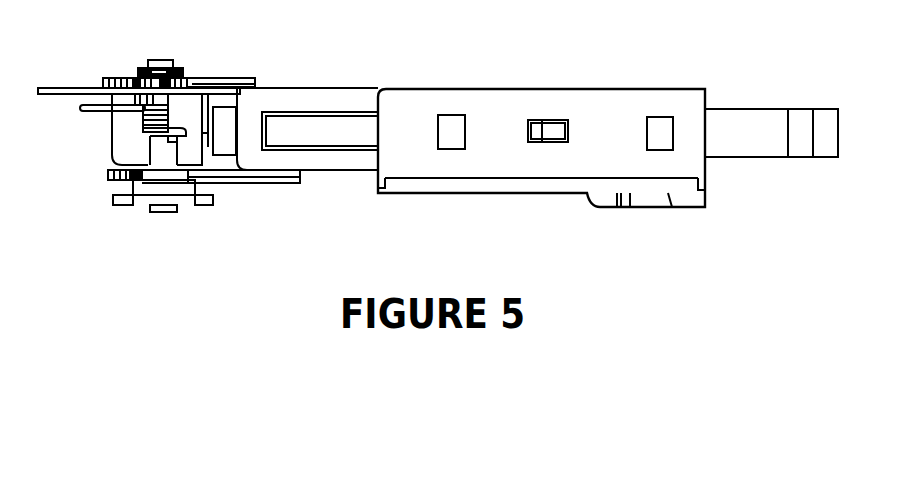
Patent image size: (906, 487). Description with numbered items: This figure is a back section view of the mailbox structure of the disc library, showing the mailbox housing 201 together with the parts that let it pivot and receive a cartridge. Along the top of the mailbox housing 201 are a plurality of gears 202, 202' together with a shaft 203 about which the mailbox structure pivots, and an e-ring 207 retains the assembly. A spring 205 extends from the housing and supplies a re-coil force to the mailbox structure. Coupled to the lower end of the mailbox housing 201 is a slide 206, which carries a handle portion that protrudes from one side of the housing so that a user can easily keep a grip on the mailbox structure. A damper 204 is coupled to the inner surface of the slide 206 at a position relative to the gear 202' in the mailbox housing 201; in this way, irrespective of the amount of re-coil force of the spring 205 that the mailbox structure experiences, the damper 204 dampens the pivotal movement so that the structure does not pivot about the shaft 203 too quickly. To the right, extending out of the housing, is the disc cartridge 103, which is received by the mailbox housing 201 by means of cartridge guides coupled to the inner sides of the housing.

The disc cartridge 103 is at (733, 147).
The mailbox housing 201 is at (336, 88).
The gear 202 is at (131, 52).
The gear 202' is at (90, 193).
The shaft 203 is at (160, 60).
The damper 204 is at (182, 199).
The spring 205 is at (83, 113).
The slide 206 is at (610, 102).
The e-ring 207 is at (185, 63).